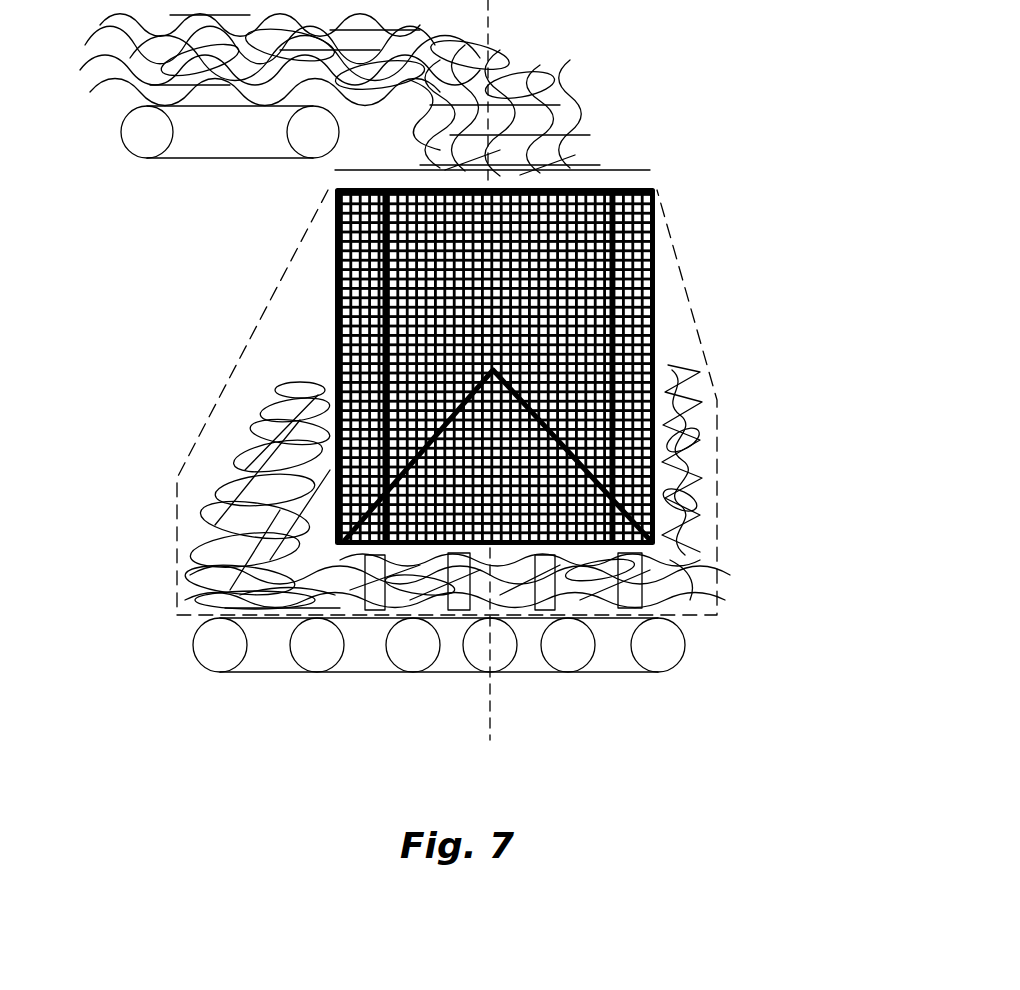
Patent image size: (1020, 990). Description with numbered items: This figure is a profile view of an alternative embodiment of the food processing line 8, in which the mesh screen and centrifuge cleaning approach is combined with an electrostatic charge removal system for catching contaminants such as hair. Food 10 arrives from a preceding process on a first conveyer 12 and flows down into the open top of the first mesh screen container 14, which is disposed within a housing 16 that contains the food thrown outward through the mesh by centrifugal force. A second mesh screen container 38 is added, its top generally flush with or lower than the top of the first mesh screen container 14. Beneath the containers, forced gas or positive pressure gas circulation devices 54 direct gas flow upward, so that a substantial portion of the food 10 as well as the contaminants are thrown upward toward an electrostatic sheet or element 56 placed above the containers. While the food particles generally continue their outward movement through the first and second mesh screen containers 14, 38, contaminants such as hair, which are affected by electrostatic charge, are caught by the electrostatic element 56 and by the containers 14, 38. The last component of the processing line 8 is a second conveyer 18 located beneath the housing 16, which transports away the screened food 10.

The food processing line 8 is at (803, 387).
The food 10 is at (405, 113).
The first conveyer 12 is at (190, 143).
The first mesh screen container 14 is at (693, 507).
The housing 16 is at (230, 375).
The second conveyer 18 is at (670, 653).
The second mesh screen container 38 is at (657, 308).
The forced gas or positive pressure gas circulation devices 54 is at (455, 615).
The electrostatic sheet or element 56 is at (620, 168).